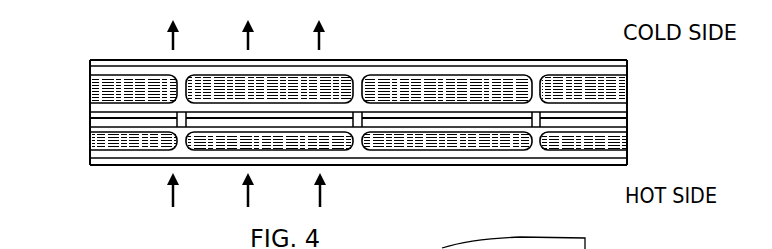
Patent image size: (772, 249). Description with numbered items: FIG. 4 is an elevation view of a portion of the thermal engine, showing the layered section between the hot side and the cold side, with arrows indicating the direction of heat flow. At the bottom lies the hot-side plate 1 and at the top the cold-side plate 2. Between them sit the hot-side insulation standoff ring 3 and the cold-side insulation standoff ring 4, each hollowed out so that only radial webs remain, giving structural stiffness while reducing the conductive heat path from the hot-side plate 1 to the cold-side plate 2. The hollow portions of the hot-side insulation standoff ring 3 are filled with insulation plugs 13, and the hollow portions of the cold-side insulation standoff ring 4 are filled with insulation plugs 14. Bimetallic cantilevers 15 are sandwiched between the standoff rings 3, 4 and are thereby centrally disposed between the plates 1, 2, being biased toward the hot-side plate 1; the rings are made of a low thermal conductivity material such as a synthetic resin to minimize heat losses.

The hot-side plate 1 is at (588, 165).
The cold-side plate 2 is at (570, 60).
The hot-side insulation standoff ring 3 is at (525, 148).
The cold-side insulation standoff ring 4 is at (522, 75).
The insulation plugs 13 is at (428, 136).
The insulation plugs 14 is at (430, 83).
The bimetallic cantilevers 15 is at (90, 120).